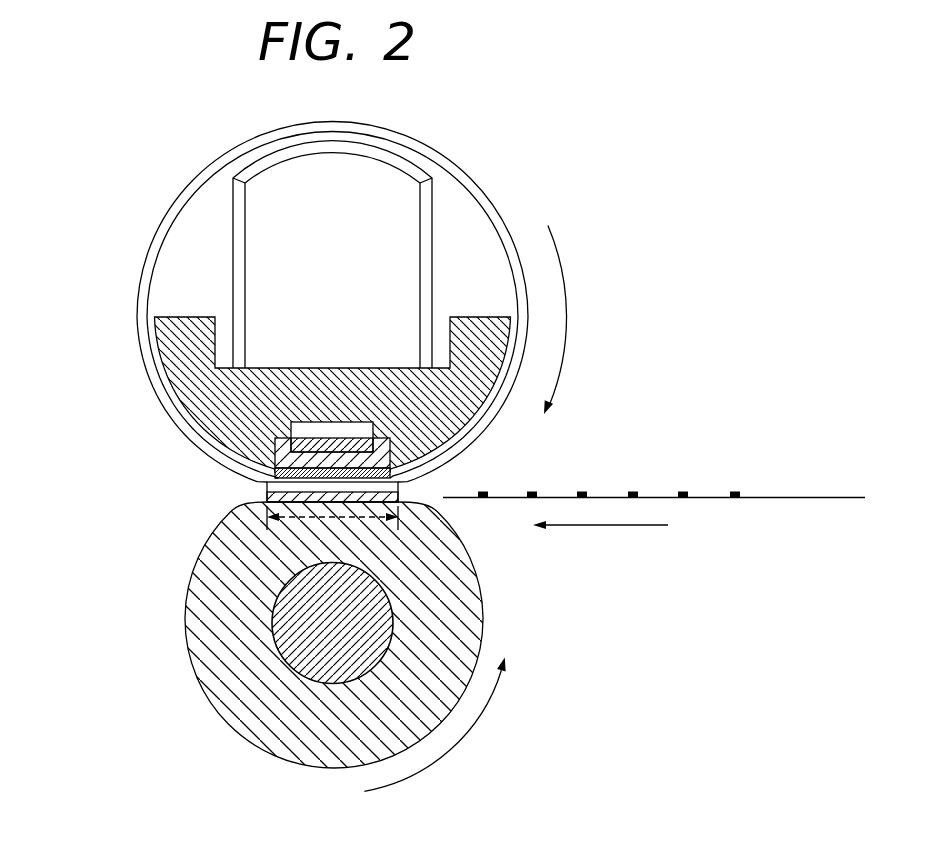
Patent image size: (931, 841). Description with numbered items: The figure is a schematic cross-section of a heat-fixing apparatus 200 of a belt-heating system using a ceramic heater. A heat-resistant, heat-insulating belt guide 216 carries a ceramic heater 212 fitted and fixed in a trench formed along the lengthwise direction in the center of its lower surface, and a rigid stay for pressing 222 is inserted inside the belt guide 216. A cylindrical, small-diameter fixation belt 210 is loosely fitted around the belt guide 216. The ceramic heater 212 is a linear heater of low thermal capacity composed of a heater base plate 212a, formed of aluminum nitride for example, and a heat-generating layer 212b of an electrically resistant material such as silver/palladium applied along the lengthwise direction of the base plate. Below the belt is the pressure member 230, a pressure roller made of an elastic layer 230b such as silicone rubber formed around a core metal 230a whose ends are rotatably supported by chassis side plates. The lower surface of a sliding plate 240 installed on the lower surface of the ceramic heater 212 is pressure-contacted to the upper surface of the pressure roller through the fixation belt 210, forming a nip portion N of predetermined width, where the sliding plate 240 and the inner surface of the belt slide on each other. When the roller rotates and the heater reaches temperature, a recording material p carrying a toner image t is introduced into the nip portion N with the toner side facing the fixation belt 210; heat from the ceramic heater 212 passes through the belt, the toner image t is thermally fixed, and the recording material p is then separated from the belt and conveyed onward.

The heat-fixing apparatus 200 is at (137, 156).
The fixation belt 210 is at (153, 252).
The ceramic heater 212 is at (438, 377).
The heater base plate 212a is at (318, 453).
The heat-generating layer 212b is at (360, 440).
The belt guide 216 is at (178, 380).
The rigid stay for pressing 222 is at (421, 172).
The pressure member 230 is at (249, 635).
The core metal 230a is at (297, 662).
The elastic layer 230b is at (217, 569).
The sliding plate 240 is at (262, 479).
The nip portion N is at (332, 529).
The toner image t is at (635, 495).
The recording material p is at (765, 498).